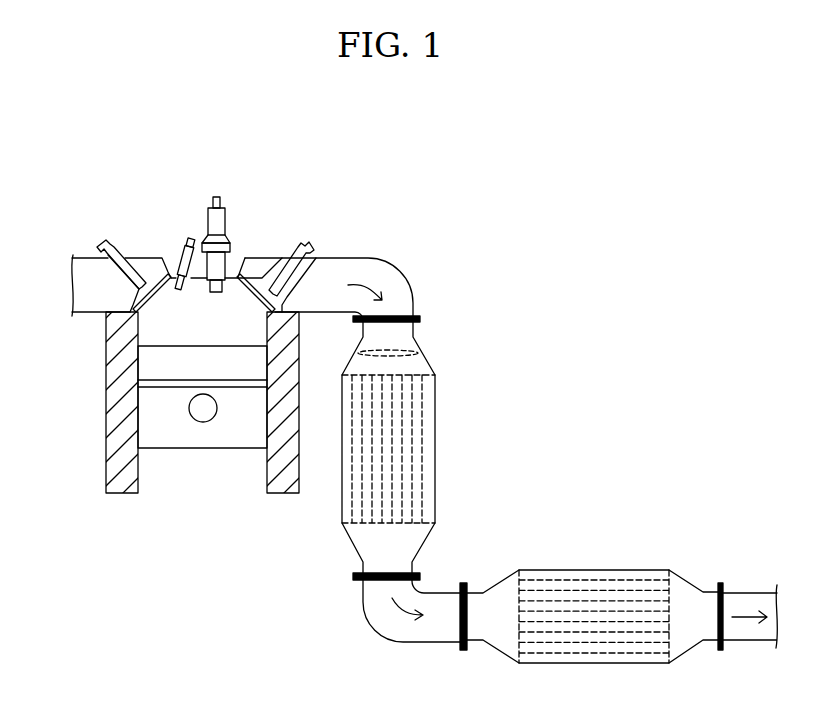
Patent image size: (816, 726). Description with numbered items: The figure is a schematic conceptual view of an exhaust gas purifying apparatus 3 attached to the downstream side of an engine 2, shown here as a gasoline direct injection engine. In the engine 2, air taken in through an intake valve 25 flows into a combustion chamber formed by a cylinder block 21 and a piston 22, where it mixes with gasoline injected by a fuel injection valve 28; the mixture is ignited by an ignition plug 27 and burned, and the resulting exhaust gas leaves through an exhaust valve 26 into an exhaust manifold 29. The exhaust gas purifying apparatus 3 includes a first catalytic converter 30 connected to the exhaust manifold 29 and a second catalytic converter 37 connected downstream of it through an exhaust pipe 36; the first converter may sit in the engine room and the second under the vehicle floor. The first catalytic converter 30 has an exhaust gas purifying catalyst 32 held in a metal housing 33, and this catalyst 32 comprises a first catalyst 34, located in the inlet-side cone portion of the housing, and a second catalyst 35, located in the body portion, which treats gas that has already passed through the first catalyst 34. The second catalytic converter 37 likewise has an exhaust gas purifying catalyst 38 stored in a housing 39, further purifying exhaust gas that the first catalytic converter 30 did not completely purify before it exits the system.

The engine 2 is at (60, 187).
The exhaust gas purifying apparatus 3 is at (515, 244).
The cylinder block 21 is at (120, 441).
The piston 22 is at (160, 366).
The intake valve 25 is at (115, 245).
The exhaust valve 26 is at (305, 246).
The ignition plug 27 is at (225, 222).
The fuel injection valve 28 is at (178, 238).
The exhaust manifold 29 is at (398, 283).
The first catalytic converter 30 is at (553, 376).
The exhaust gas purifying catalyst 32 is at (493, 333).
The housing 33 is at (342, 460).
The first catalyst 34 is at (418, 353).
The second catalyst 35 is at (408, 503).
The exhaust pipe 36 is at (435, 625).
The second catalytic converter 37 is at (648, 514).
The exhaust gas purifying catalyst 38 is at (600, 633).
The housing 39 is at (540, 570).